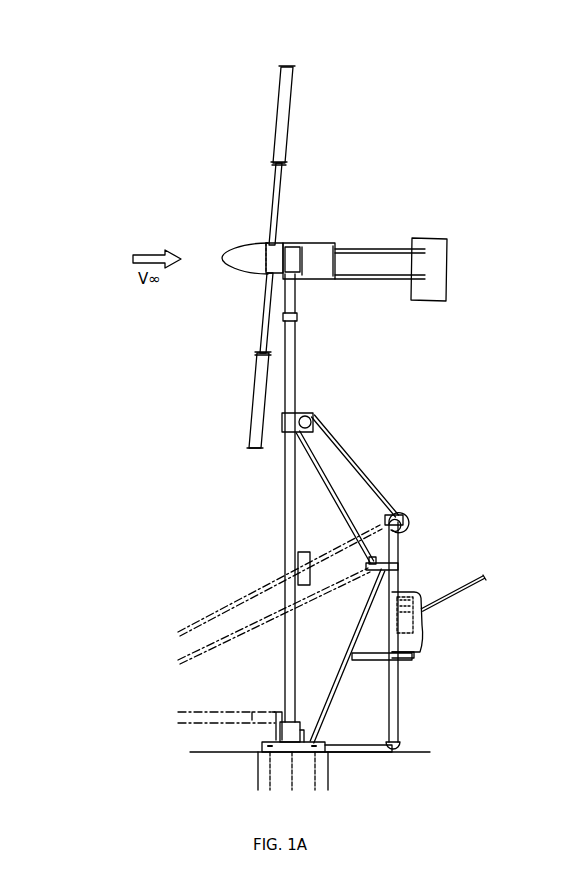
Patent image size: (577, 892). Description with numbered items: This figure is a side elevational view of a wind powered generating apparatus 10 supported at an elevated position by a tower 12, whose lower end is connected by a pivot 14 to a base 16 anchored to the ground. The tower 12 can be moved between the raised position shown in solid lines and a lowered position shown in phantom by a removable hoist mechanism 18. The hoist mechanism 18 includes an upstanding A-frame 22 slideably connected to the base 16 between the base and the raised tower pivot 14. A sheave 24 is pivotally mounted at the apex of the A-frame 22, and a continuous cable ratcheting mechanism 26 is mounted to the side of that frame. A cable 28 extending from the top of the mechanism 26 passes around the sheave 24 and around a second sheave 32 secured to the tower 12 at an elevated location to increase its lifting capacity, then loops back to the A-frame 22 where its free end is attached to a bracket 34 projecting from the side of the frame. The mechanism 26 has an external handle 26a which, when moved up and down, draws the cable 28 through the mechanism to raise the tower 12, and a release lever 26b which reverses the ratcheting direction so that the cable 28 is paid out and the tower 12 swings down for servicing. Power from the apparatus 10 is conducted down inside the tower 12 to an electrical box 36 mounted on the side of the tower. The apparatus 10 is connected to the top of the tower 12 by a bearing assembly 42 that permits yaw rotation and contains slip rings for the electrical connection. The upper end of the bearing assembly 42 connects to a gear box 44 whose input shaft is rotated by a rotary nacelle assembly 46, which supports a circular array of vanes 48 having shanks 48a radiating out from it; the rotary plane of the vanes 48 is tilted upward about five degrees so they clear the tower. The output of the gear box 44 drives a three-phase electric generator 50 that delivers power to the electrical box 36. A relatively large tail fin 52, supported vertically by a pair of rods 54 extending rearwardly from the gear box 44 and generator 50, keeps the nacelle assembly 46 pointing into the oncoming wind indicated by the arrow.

The wind powered generating apparatus 10 is at (213, 130).
The tower 12 is at (297, 340).
The pivot 14 is at (286, 718).
The base 16 is at (264, 746).
The hoist mechanism 18 is at (412, 518).
The A-frame 22 is at (388, 664).
The sheave 24 is at (384, 516).
The continuous cable ratcheting mechanism 26 is at (420, 632).
The external handle 26a is at (484, 584).
The release lever 26b is at (418, 656).
The cable 28 is at (400, 566).
The second sheave 32 is at (312, 412).
The bracket 34 is at (376, 566).
The electrical box 36 is at (308, 552).
The bearing assembly 42 is at (296, 300).
The gear box 44 is at (290, 262).
The rotary nacelle assembly 46 is at (245, 230).
The vanes 48 is at (263, 88).
The shanks 48a is at (268, 188).
The electric generator 50 is at (326, 254).
The tail fin 52 is at (447, 294).
The rods 54 is at (398, 282).